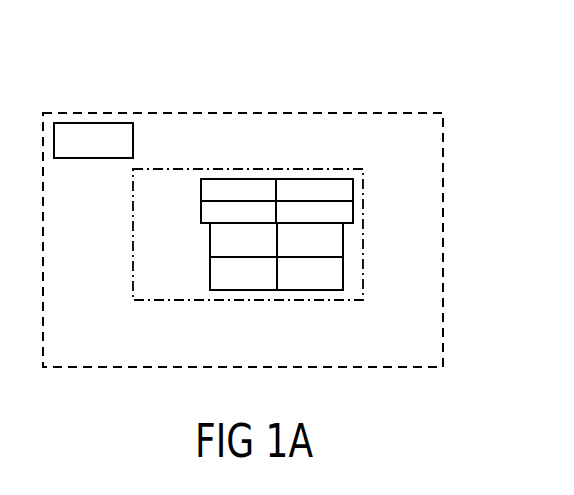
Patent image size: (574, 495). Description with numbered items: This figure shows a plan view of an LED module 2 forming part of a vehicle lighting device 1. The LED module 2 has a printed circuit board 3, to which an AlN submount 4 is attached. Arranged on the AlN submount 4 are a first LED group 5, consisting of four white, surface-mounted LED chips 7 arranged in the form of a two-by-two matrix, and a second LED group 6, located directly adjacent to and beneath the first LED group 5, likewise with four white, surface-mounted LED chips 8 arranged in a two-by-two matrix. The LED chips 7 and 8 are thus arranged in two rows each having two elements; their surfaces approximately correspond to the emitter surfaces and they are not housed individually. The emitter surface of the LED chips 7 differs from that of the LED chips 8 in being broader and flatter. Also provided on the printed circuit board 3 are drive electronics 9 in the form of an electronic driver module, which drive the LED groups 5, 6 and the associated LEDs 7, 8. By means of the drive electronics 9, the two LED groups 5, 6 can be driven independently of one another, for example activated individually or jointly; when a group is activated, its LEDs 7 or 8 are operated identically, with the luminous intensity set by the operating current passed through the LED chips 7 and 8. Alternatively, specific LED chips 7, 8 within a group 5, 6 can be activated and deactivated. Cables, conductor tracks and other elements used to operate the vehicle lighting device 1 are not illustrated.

The vehicle lighting device 1 is at (403, 66).
The LED module 2 is at (447, 113).
The printed circuit board 3 is at (443, 318).
The AlN submount 4 is at (368, 208).
The first LED group 5 is at (191, 180).
The second LED group 6 is at (189, 221).
The LED chips 7 is at (222, 190).
The LED chips 8 is at (320, 245).
The drive electronics 9 is at (108, 123).